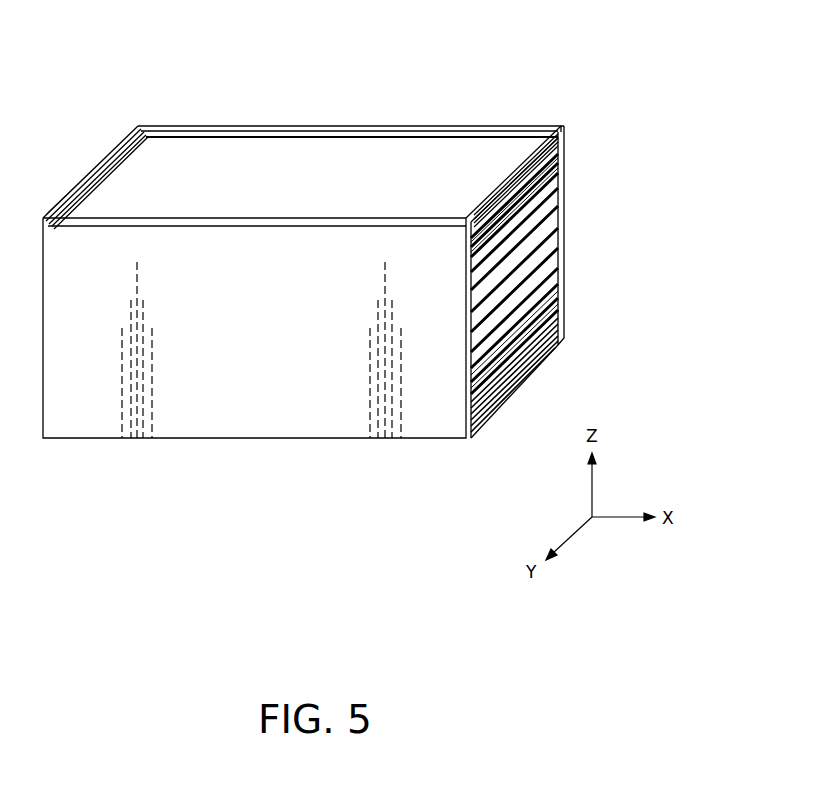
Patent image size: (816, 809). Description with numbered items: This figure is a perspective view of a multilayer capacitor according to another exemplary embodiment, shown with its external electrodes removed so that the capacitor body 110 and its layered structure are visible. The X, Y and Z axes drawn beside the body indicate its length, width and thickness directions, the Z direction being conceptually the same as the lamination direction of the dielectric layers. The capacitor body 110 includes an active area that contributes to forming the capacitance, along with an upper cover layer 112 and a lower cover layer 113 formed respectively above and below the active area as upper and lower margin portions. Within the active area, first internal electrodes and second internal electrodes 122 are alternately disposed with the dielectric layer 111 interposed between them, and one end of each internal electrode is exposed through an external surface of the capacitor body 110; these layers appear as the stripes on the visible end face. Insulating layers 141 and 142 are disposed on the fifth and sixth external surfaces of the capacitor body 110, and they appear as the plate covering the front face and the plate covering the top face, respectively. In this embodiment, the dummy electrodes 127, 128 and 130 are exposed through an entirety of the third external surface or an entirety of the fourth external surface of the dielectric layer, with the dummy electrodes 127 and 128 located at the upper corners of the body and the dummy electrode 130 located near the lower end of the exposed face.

The capacitor body 110 is at (238, 170).
The dielectric layer 111 is at (488, 328).
The upper cover layer 112 is at (556, 165).
The lower cover layer 113 is at (553, 308).
The second internal electrode 122 is at (556, 248).
The dummy electrode 127 is at (138, 126).
The dummy electrode 128 is at (550, 128).
The dummy electrode 130 is at (532, 375).
The insulating layer 141 is at (256, 400).
The insulating layer 142 is at (310, 130).